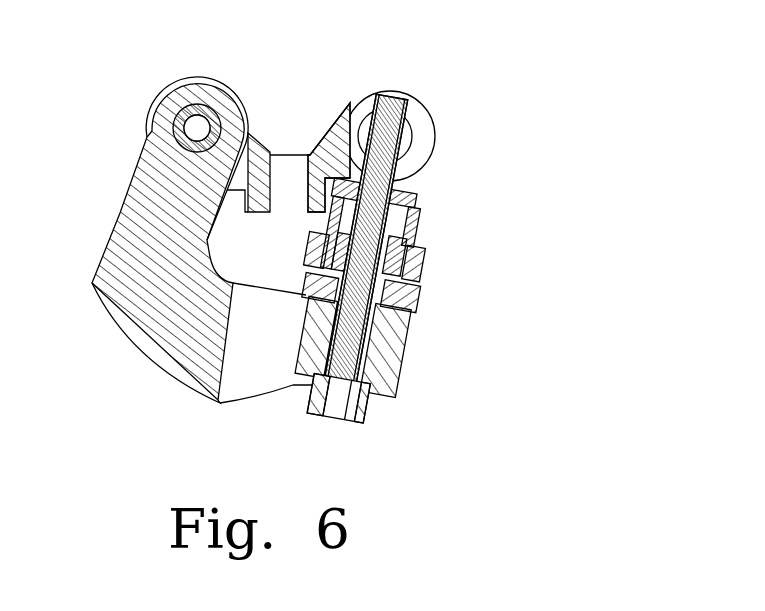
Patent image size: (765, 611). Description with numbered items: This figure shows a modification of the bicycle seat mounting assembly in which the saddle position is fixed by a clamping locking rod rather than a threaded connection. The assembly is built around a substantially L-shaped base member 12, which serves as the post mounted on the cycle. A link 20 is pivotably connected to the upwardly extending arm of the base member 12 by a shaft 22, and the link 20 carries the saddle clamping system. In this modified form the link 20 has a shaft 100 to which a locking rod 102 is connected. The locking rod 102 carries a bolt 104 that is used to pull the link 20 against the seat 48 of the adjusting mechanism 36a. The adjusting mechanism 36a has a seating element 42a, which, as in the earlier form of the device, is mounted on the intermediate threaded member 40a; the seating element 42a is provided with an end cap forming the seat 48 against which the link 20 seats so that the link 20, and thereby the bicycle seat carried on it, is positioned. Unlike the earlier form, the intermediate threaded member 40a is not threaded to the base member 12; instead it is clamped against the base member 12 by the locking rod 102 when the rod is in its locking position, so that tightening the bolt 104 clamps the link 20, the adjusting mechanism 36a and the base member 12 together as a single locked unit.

The base member 12 is at (122, 208).
The link 20 is at (253, 132).
The shaft 22 is at (190, 107).
The adjusting mechanism 36a is at (460, 228).
The intermediate threaded member 40a is at (413, 305).
The seating element 42a is at (413, 247).
The seat 48 is at (417, 195).
The shaft 100 is at (410, 133).
The locking rod 102 is at (396, 100).
The bolt 104 is at (330, 417).